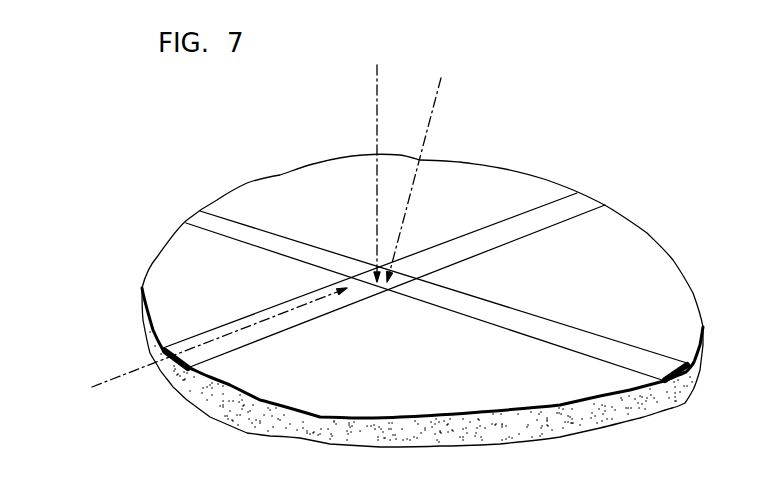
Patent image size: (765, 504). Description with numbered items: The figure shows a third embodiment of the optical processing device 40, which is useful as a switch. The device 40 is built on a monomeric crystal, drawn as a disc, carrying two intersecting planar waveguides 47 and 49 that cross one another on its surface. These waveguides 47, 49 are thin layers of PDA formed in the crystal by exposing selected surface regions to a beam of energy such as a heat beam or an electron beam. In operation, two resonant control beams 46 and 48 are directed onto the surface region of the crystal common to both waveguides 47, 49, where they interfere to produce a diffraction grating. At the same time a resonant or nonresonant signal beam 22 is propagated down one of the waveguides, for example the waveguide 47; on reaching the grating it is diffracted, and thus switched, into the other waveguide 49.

The optical processing device 40 is at (260, 133).
The signal beam 22 is at (147, 367).
The resonant control beam 46 is at (377, 80).
The planar waveguide 47 is at (178, 344).
The resonant control beam 48 is at (432, 120).
The planar waveguide 49 is at (202, 221).